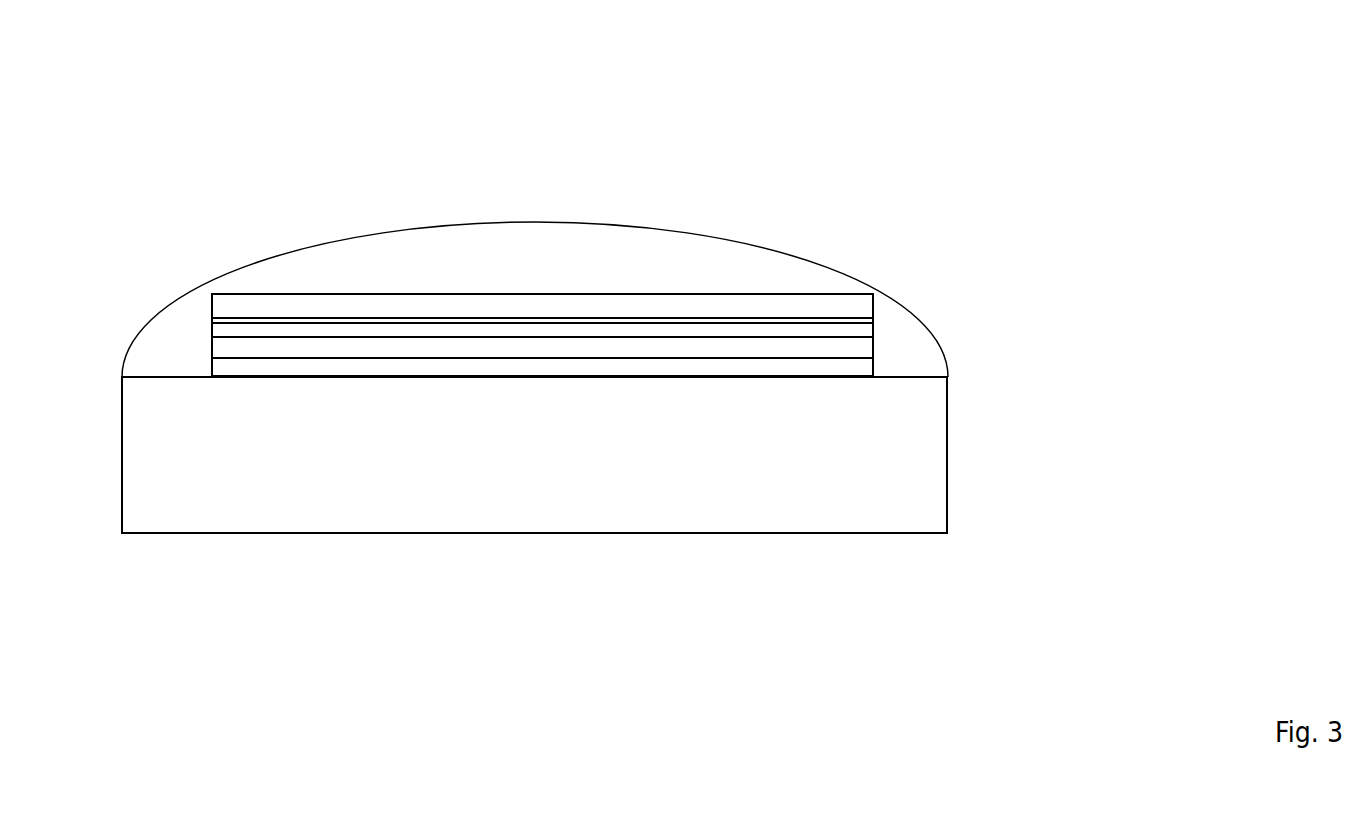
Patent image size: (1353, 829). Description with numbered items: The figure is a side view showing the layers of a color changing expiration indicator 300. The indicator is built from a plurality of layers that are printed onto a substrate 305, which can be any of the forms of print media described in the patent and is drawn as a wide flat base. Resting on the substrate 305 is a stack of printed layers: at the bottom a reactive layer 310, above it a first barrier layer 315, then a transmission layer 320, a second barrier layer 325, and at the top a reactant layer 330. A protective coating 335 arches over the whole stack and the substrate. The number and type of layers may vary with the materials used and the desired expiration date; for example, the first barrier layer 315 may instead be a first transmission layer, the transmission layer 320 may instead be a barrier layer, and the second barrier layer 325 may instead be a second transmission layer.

The color changing expiration indicator 300 is at (263, 181).
The substrate 305 is at (183, 534).
The reactive layer 310 is at (884, 367).
The first barrier layer 315 is at (884, 342).
The transmission layer 320 is at (883, 323).
The second barrier layer 325 is at (882, 306).
The reactant layer 330 is at (881, 293).
The protective coating 335 is at (839, 262).